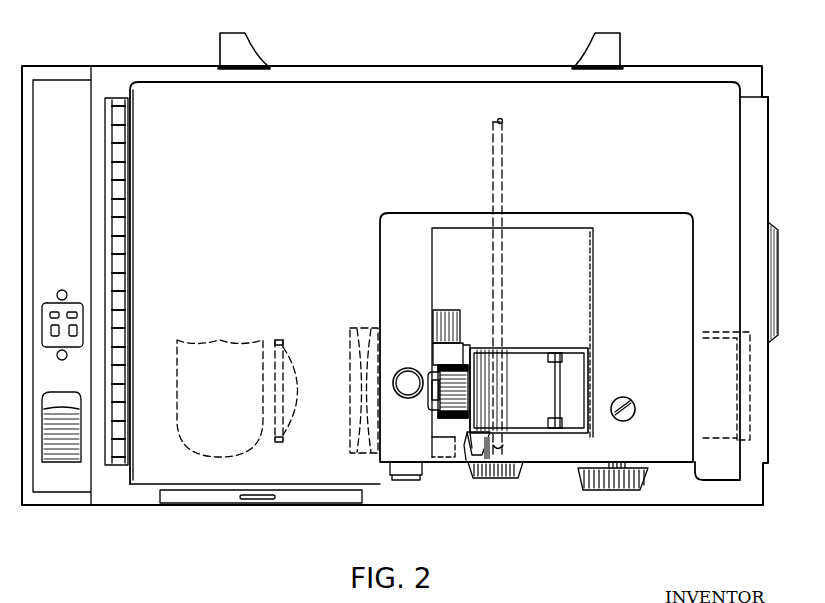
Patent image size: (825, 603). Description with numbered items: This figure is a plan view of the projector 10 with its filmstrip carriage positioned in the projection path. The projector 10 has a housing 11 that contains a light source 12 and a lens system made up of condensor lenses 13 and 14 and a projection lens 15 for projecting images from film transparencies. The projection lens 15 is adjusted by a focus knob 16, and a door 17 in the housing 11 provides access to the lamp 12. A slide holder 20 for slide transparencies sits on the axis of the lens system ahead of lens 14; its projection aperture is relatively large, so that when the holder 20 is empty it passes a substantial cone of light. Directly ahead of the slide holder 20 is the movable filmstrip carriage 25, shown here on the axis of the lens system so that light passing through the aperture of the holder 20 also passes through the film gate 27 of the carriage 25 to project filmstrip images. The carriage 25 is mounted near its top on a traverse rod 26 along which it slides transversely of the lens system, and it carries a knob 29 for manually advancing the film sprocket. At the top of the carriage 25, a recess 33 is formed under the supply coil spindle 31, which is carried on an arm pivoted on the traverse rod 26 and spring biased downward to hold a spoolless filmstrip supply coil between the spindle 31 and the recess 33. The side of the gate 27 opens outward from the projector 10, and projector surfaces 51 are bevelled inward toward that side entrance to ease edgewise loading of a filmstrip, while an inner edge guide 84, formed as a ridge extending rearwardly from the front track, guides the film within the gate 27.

The projector 10 is at (478, 58).
The housing 11 is at (252, 195).
The light source 12 is at (222, 341).
The condensor lens 13 is at (296, 358).
The condensor lens 14 is at (357, 378).
The projection lens 15 is at (740, 334).
The focus knob 16 is at (627, 491).
The door 17 is at (218, 500).
The slide holder 20 is at (410, 482).
The filmstrip carriage 25 is at (430, 363).
The traverse rod 26 is at (505, 188).
The film gate 27 is at (470, 383).
The knob 29 is at (516, 480).
The supply coil holder (spindle) 31 is at (559, 392).
The recess 33 is at (543, 415).
The projector surfaces 51 is at (469, 450).
The inner edge guide 84 is at (467, 346).